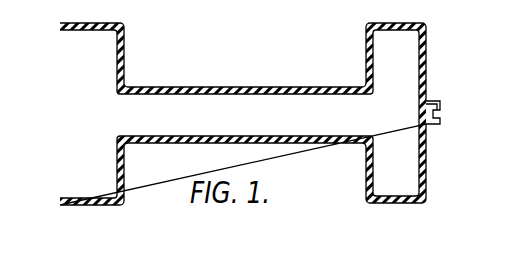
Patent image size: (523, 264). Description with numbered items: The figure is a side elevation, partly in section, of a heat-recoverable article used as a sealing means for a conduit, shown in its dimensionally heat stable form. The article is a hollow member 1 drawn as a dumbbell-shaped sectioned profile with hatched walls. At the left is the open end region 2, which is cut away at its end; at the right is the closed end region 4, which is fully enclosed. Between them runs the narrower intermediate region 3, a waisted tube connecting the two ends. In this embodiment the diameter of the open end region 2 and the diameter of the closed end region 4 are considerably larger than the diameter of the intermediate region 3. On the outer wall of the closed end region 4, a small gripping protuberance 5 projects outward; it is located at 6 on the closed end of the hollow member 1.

The hollow member 1 is at (431, 184).
The open end region 2 is at (88, 32).
The intermediate region 3 is at (161, 88).
The closed end region 4 is at (400, 30).
The gripping protuberance 5 is at (439, 122).
The location of gripping protuberance 6 is at (429, 106).